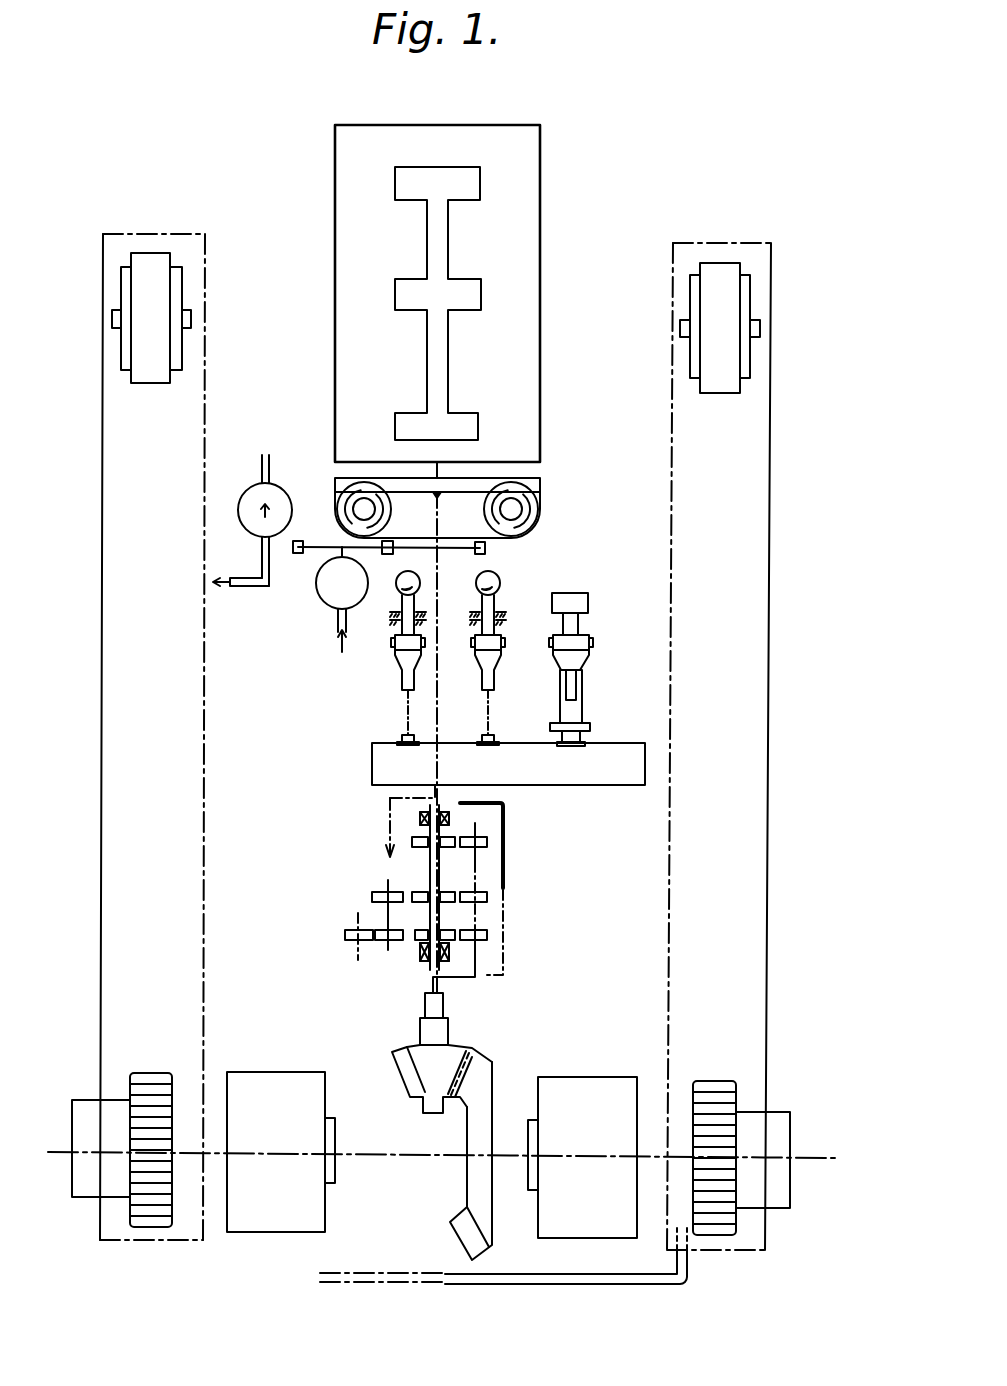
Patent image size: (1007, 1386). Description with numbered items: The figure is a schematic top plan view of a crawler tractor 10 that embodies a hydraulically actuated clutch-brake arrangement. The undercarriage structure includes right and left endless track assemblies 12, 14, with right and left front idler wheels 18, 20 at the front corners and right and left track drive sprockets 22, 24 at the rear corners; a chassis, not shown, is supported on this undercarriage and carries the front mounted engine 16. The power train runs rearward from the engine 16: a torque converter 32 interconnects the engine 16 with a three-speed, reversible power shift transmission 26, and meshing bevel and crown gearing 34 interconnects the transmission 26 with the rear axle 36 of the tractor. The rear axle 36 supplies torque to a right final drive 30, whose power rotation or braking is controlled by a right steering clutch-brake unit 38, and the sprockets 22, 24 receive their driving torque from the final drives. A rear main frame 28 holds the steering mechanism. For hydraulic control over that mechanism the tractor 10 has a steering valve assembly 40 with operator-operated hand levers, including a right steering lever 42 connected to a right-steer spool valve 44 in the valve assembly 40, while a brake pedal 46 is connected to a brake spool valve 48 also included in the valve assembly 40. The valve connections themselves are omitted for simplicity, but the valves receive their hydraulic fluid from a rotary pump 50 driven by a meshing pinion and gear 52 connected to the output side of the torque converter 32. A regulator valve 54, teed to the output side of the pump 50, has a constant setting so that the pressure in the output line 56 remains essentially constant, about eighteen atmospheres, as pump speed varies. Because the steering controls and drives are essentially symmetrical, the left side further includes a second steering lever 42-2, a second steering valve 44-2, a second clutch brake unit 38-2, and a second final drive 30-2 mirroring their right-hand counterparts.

The crawler tractor 10 is at (607, 172).
The right endless track assembly 12 is at (770, 510).
The left endless track assembly 14 is at (100, 487).
The engine 16 is at (348, 125).
The right front idler wheel 18 is at (736, 286).
The left front idler wheel 20 is at (133, 282).
The right track drive sprocket 22 is at (714, 1082).
The left track drive sprocket 24 is at (150, 1077).
The power shift transmission 26 is at (506, 840).
The rear main frame 28 is at (620, 1284).
The right final drive 30 is at (790, 1118).
The second final drive 30-2 is at (80, 1100).
The torque converter 32 is at (540, 497).
The bevel and crown gearing 34 is at (456, 1050).
The rear axle 36 is at (433, 1158).
The right steering clutch-brake unit 38 is at (592, 1077).
The second clutch brake unit 38-2 is at (306, 1072).
The steering valve assembly 40 is at (620, 773).
The right steering lever 42 is at (501, 583).
The second steering lever 42-2 is at (421, 583).
The right-steer spool valve 44 is at (482, 738).
The second steering valve 44-2 is at (404, 738).
The brake pedal 46 is at (586, 594).
The brake spool valve 48 is at (581, 740).
The rotary pump 50 is at (326, 609).
The pinion and gear 52 is at (383, 556).
The regulator valve 54 is at (249, 491).
The output line 56 is at (246, 588).